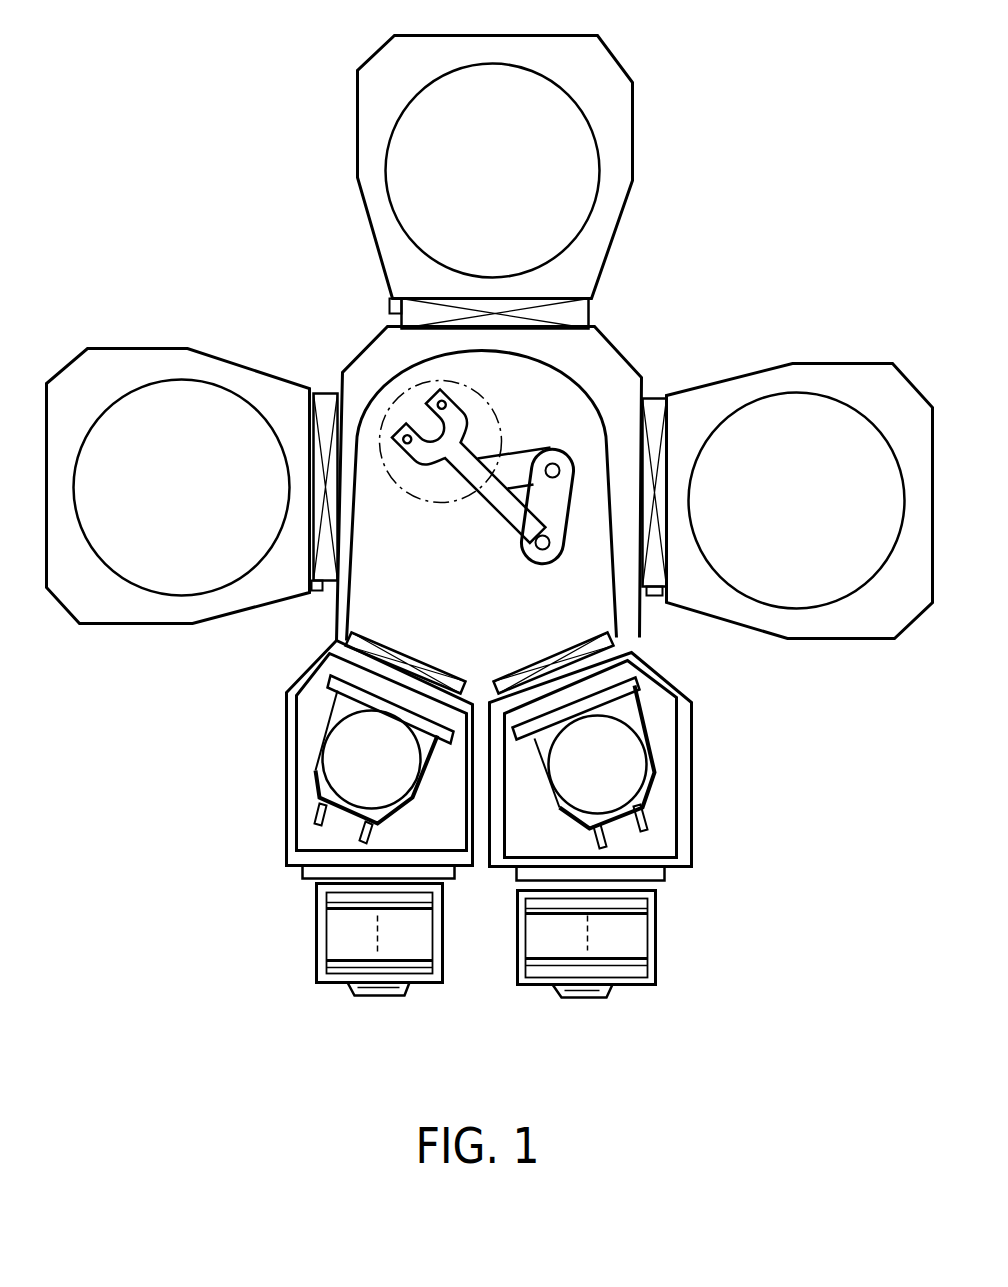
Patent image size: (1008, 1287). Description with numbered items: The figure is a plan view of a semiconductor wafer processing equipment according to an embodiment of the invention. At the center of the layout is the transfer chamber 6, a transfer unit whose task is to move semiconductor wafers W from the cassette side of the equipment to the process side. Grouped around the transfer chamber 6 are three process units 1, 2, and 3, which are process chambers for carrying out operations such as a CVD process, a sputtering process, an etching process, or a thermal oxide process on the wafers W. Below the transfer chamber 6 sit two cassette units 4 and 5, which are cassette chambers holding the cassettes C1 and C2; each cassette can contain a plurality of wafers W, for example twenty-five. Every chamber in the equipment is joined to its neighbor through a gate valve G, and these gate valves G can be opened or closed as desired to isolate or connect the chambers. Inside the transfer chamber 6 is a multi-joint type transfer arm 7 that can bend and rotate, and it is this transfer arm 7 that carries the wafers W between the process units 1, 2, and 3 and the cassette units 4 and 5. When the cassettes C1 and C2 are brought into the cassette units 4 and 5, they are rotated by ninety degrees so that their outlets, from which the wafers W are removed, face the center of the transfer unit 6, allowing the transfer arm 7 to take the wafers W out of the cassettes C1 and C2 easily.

The process unit 1 is at (150, 390).
The process unit 2 is at (590, 151).
The process unit 3 is at (791, 397).
The cassette unit 4 is at (290, 706).
The cassette unit 5 is at (695, 852).
The transfer chamber 6 is at (538, 612).
The transfer arm 7 is at (553, 528).
The gate valve G is at (320, 393).
The semiconductor wafer W is at (415, 492).
The cassette C1 is at (315, 756).
The cassette C2 is at (650, 765).